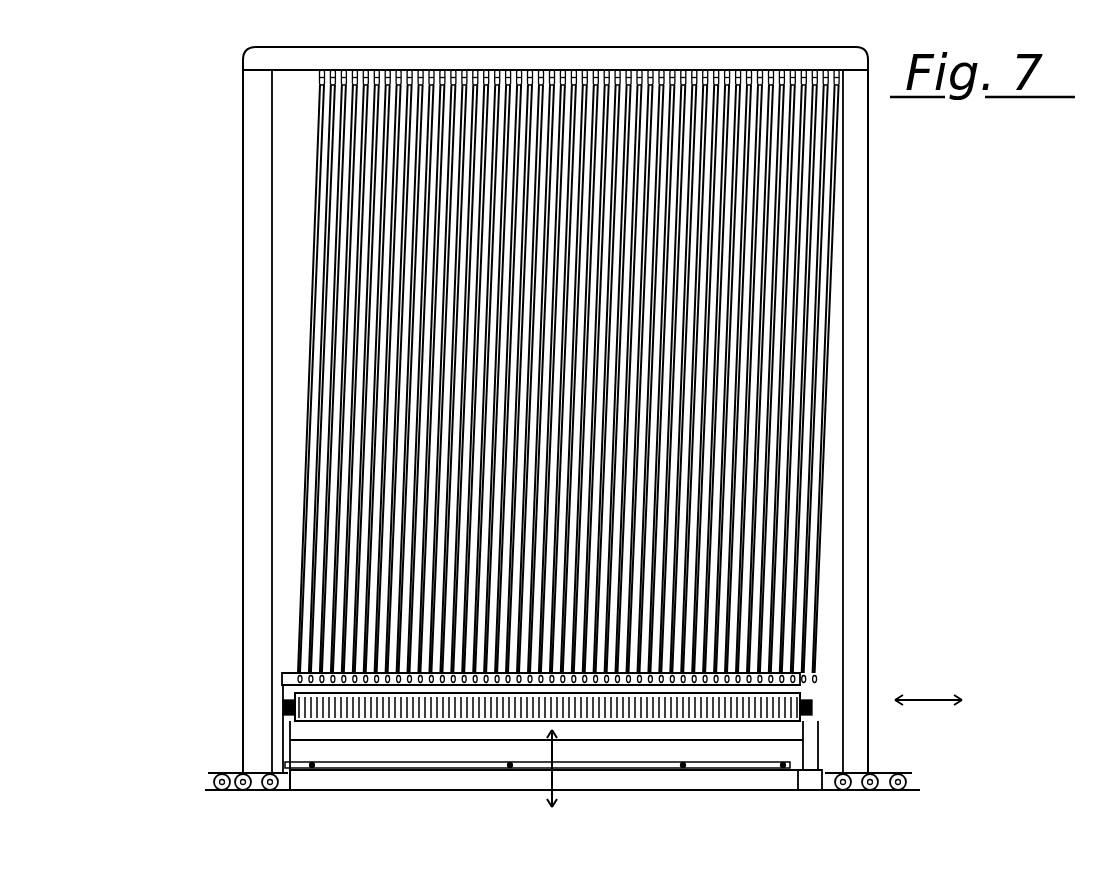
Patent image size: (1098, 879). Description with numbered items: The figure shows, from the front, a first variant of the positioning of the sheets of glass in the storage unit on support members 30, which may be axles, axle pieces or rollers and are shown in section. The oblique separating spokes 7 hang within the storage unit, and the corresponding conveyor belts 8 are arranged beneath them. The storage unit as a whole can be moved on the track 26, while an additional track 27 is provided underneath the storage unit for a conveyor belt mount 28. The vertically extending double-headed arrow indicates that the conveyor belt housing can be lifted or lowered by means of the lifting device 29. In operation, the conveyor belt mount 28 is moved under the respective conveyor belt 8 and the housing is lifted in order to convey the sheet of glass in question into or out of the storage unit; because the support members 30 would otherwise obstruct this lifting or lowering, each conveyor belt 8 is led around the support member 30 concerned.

The separating spokes 7 is at (323, 260).
The conveyor belt 8 is at (755, 705).
The track 26 is at (212, 773).
The additional track 27 is at (383, 782).
The conveyor belt mount 28 is at (335, 758).
The lifting device 29 is at (818, 748).
The support members 30 is at (808, 683).